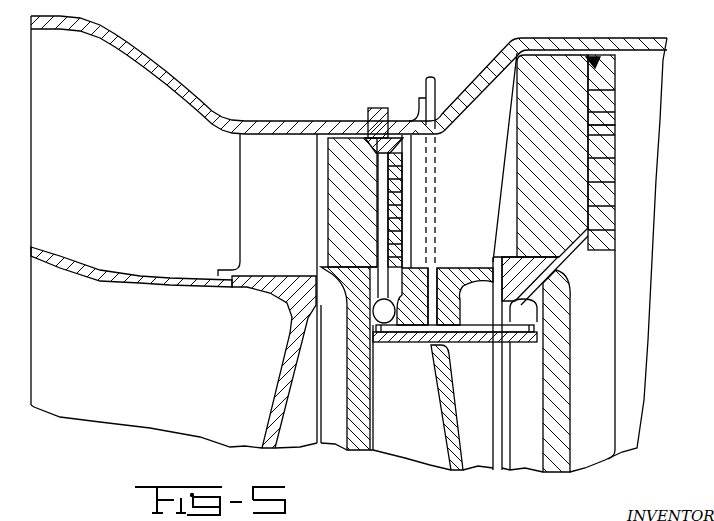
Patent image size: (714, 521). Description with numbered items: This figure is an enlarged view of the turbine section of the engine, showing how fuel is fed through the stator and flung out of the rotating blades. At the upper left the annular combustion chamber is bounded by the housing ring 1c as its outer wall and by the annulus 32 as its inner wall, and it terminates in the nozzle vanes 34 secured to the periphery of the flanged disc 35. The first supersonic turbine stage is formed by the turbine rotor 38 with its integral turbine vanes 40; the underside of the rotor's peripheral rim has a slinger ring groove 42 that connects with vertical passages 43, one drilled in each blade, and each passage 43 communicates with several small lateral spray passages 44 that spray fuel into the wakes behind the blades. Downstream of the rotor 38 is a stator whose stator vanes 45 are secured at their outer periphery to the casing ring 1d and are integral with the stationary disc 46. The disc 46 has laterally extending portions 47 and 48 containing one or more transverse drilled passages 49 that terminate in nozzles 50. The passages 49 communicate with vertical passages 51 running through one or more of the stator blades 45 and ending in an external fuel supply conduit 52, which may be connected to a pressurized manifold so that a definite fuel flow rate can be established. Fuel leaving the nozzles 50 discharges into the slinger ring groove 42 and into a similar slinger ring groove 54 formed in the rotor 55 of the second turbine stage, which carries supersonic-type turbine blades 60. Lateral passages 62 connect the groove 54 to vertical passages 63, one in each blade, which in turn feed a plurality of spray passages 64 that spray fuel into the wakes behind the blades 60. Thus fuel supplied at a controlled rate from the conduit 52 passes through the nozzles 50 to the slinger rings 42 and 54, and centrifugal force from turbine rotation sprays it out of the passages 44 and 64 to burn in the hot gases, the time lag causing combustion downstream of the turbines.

The housing ring 1c is at (130, 43).
The casing ring 1d is at (468, 80).
The annulus 32 is at (104, 276).
The nozzle vanes 34 is at (284, 217).
The flanged disc 35 is at (286, 347).
The turbine rotor 38 is at (342, 341).
The turbine vanes 40 is at (328, 170).
The slinger ring groove 42 is at (400, 296).
The vertical passages 43 is at (373, 161).
The lateral spray passages 44 is at (402, 160).
The stator vanes 45 is at (468, 186).
The stationary disc 46 is at (434, 350).
The laterally extending portion 47 is at (386, 343).
The laterally extending portion 48 is at (478, 344).
The transverse drilled passages 49 is at (477, 311).
The nozzles 50 is at (523, 310).
The vertical passages 51 is at (438, 237).
The external fuel supply conduit 52 is at (425, 81).
The slinger ring groove 54 is at (535, 374).
The rotor 55 is at (580, 332).
The turbine blades 60 is at (618, 233).
The lateral passages 62 is at (562, 273).
The vertical passages 63 is at (594, 150).
The spray passages 64 is at (613, 115).